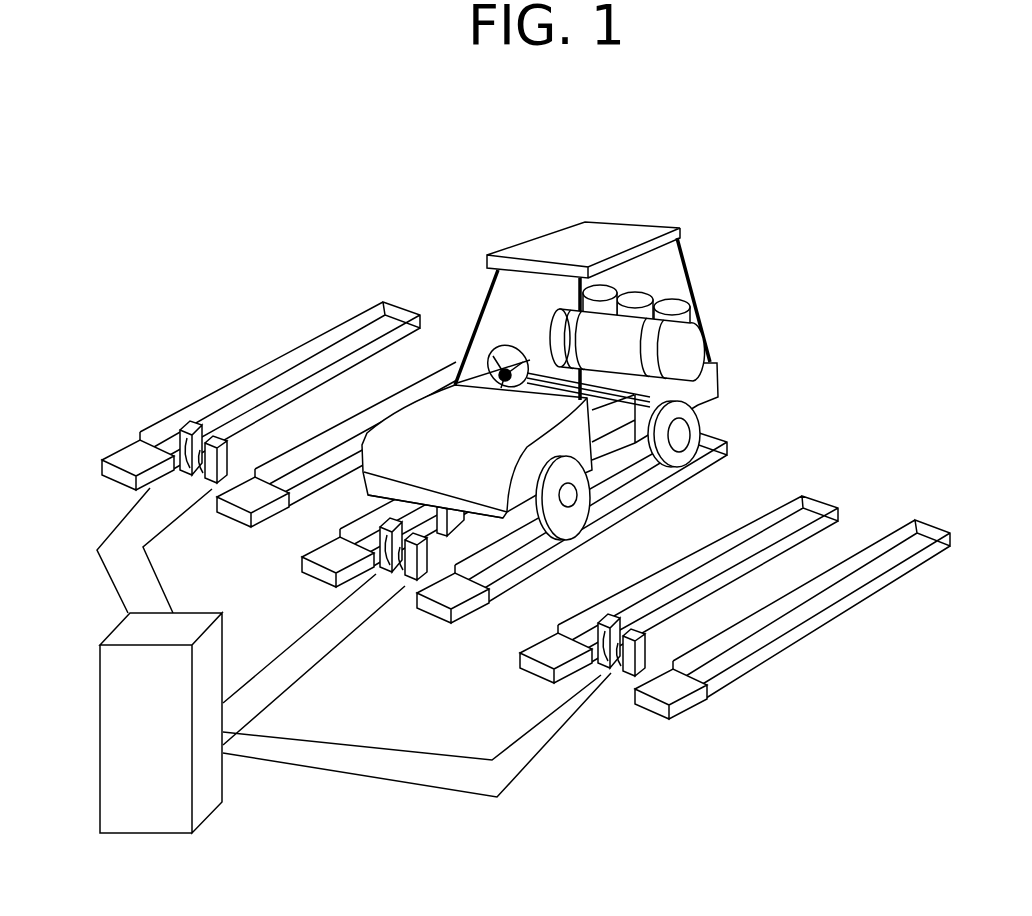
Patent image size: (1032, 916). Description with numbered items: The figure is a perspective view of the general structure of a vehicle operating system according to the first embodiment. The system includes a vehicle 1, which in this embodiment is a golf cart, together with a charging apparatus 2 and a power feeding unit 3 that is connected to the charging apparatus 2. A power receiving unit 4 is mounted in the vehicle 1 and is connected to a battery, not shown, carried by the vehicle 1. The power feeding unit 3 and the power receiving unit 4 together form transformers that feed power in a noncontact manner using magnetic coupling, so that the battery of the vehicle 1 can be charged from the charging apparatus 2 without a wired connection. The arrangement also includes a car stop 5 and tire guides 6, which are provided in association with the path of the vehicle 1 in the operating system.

The vehicle 1 is at (703, 375).
The charging apparatus 2 is at (155, 812).
The power feeding unit 3 is at (190, 488).
The power receiving unit 4 is at (452, 520).
The car stop 5 is at (125, 478).
The tire guides 6 is at (453, 380).